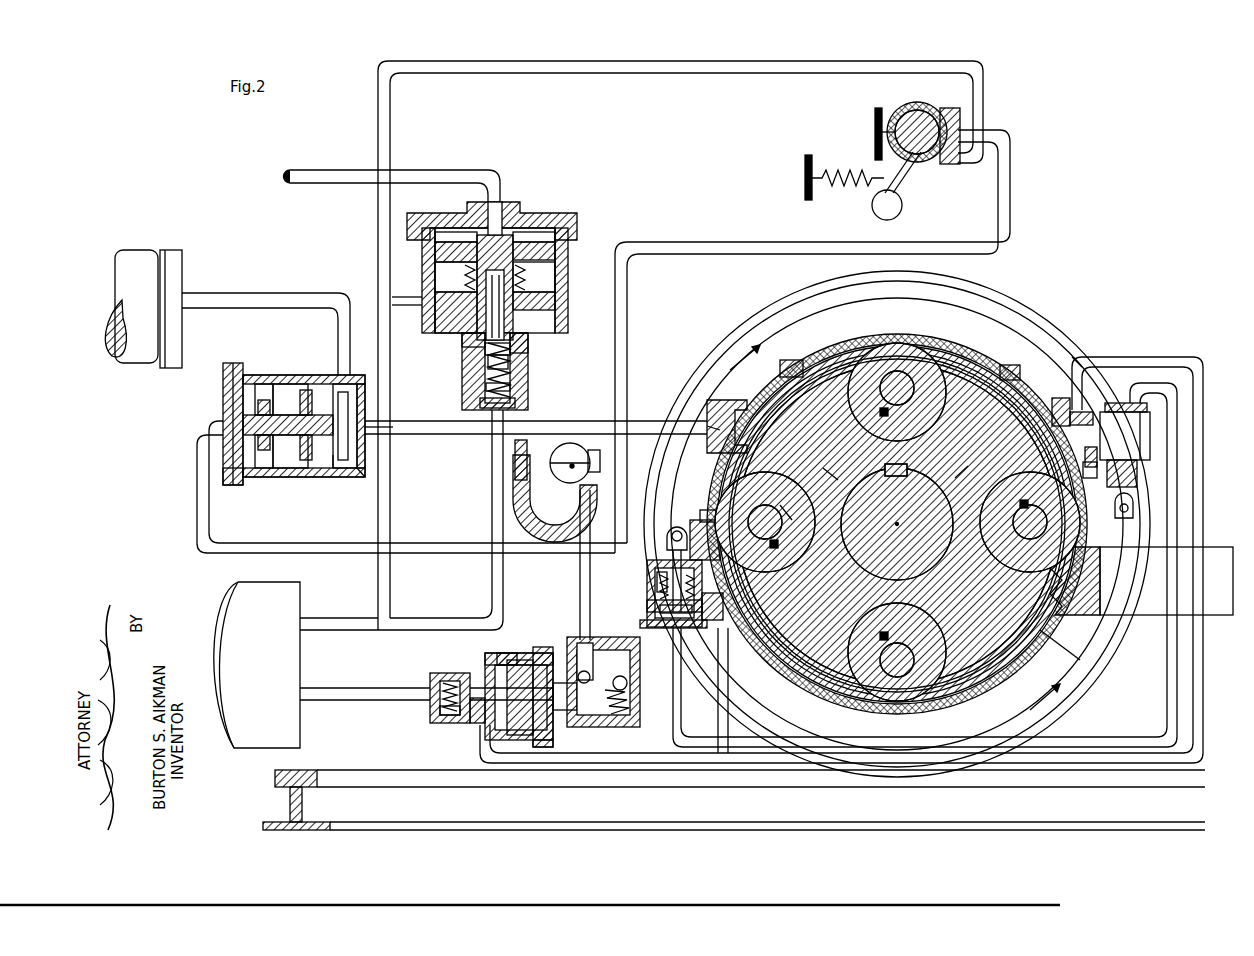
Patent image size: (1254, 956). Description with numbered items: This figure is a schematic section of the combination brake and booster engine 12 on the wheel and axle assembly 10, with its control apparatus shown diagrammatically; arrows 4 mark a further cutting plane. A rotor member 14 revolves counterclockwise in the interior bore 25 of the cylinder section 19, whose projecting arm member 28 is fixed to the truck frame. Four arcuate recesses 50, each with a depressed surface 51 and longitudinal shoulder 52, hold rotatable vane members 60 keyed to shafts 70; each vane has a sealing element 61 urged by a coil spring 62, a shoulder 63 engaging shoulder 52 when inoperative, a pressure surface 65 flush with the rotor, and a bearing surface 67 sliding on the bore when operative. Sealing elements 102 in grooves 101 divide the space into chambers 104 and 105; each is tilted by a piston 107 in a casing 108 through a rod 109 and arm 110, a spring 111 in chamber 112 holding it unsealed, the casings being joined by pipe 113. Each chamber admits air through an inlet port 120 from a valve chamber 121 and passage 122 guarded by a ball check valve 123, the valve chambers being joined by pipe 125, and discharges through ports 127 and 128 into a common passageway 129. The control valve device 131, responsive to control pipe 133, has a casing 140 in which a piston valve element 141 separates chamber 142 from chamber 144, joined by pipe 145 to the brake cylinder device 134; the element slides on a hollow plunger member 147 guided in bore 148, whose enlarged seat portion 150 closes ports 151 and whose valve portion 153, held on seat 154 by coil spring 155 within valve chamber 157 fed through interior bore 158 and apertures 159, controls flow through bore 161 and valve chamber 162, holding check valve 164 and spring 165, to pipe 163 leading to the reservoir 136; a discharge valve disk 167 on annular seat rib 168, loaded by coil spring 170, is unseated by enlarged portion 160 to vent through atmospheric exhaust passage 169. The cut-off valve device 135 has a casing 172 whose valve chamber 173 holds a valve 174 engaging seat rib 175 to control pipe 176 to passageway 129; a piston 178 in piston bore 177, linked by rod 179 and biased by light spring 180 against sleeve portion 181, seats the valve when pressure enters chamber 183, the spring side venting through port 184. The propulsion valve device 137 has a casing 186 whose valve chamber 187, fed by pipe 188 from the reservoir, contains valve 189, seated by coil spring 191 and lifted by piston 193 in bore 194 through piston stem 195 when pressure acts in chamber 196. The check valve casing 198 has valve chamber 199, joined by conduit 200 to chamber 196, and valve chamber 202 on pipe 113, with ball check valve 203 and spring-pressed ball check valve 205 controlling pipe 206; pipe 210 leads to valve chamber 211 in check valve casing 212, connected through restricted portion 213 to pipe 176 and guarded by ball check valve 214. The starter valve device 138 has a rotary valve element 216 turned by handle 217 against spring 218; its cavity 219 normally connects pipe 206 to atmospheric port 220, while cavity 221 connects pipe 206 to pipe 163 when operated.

The section line 4 is at (895, 529).
The rotor hub 10 is at (920, 484).
The pump housing 12 is at (1043, 360).
The housing wall 14 is at (1020, 366).
The liner 19 is at (961, 335).
The cam ring 25 is at (1005, 350).
The mounting bracket 28 is at (1212, 565).
The stator ring 50 is at (897, 524).
The cylinder liner ring 51 is at (897, 524).
The rotor 52 is at (897, 524).
The piston 60 is at (792, 523).
The cylinder 61 is at (897, 522).
The piston pin 62 is at (899, 495).
The passage 63 is at (889, 555).
The port ring 65 is at (900, 503).
The port 67 is at (898, 524).
The slipper 70 is at (913, 588).
The pivot pin 101 is at (690, 520).
The control block 102 is at (700, 505).
The bearing race 104 is at (858, 340).
The outer race 105 is at (1071, 653).
The valve body 107 is at (917, 525).
The valve housing 108 is at (650, 606).
The valve stem 109 is at (650, 568).
The valve plunger 110 is at (918, 497).
The spring 111 is at (660, 578).
The seat 112 is at (659, 612).
The conduit 113 is at (1160, 384).
The port block 120 is at (1062, 400).
The conduit 121 is at (1082, 410).
The spring seat 122 is at (1092, 473).
The valve casing 123 is at (919, 529).
The return conduit 125 is at (1196, 717).
The wear plate 127 is at (790, 360).
The housing flange 128 is at (716, 458).
The bearing block 129 is at (724, 400).
The control valve 131 is at (501, 286).
The supply pipe 133 is at (430, 170).
The hand lever 134 is at (150, 282).
The control cylinder 135 is at (279, 422).
The reservoir 136 is at (290, 600).
The pump unit 137 is at (501, 673).
The relief valve 138 is at (887, 151).
The valve body 140 is at (566, 262).
The sleeve 141 is at (556, 252).
The cap 142 is at (540, 232).
The piston 144 is at (436, 268).
The link 145 is at (343, 302).
The spring 147 is at (556, 278).
The seat 148 is at (528, 338).
The spool 150 is at (470, 232).
The flange 151 is at (574, 214).
The disc 153 is at (511, 350).
The lower body 154 is at (462, 366).
The stem 155 is at (500, 214).
The spring 157 is at (487, 360).
The shoulder 158 is at (466, 338).
The bore 159 is at (495, 306).
The chamber 160 is at (450, 325).
The ball seat 161 is at (509, 364).
The plug 162 is at (514, 396).
The pressure conduit 163 is at (692, 73).
The ball 164 is at (486, 385).
The outlet 165 is at (470, 403).
The chamber 167 is at (436, 285).
The passage 168 is at (408, 311).
The ring 169 is at (556, 300).
The land 170 is at (436, 255).
The end wall 172 is at (358, 478).
The plunger 173 is at (348, 395).
The seal 174 is at (333, 469).
The rod 175 is at (380, 435).
The control rod 176 is at (480, 436).
The spring 177 is at (275, 468).
The piston head 178 is at (228, 372).
The chamber 179 is at (312, 395).
The end cap 180 is at (236, 480).
The piston 181 is at (272, 402).
The cylinder wall 183 is at (222, 397).
The chamber 184 is at (308, 468).
The drain 186 is at (470, 730).
The bearing 187 is at (448, 672).
The drive shaft 188 is at (320, 688).
The seal 189 is at (440, 710).
The spring 191 is at (442, 682).
The impeller 193 is at (520, 660).
The housing 194 is at (504, 653).
The pump housing 195 is at (488, 660).
The disc 196 is at (548, 650).
The valve block 198 is at (620, 681).
The spring 199 is at (612, 720).
The base 200 is at (545, 732).
The plunger 202 is at (585, 645).
The ball 203 is at (596, 689).
The ball valve 205 is at (628, 680).
The return conduit 206 is at (790, 242).
The conduit 210 is at (580, 572).
The dome 211 is at (578, 456).
The accumulator body 212 is at (537, 488).
The plug 213 is at (517, 476).
The fitting 214 is at (590, 480).
The stem 216 is at (895, 130).
The weight 217 is at (900, 210).
The spring 218 is at (845, 185).
The seat 219 is at (940, 112).
The ball 220 is at (930, 112).
The outlet 221 is at (940, 164).